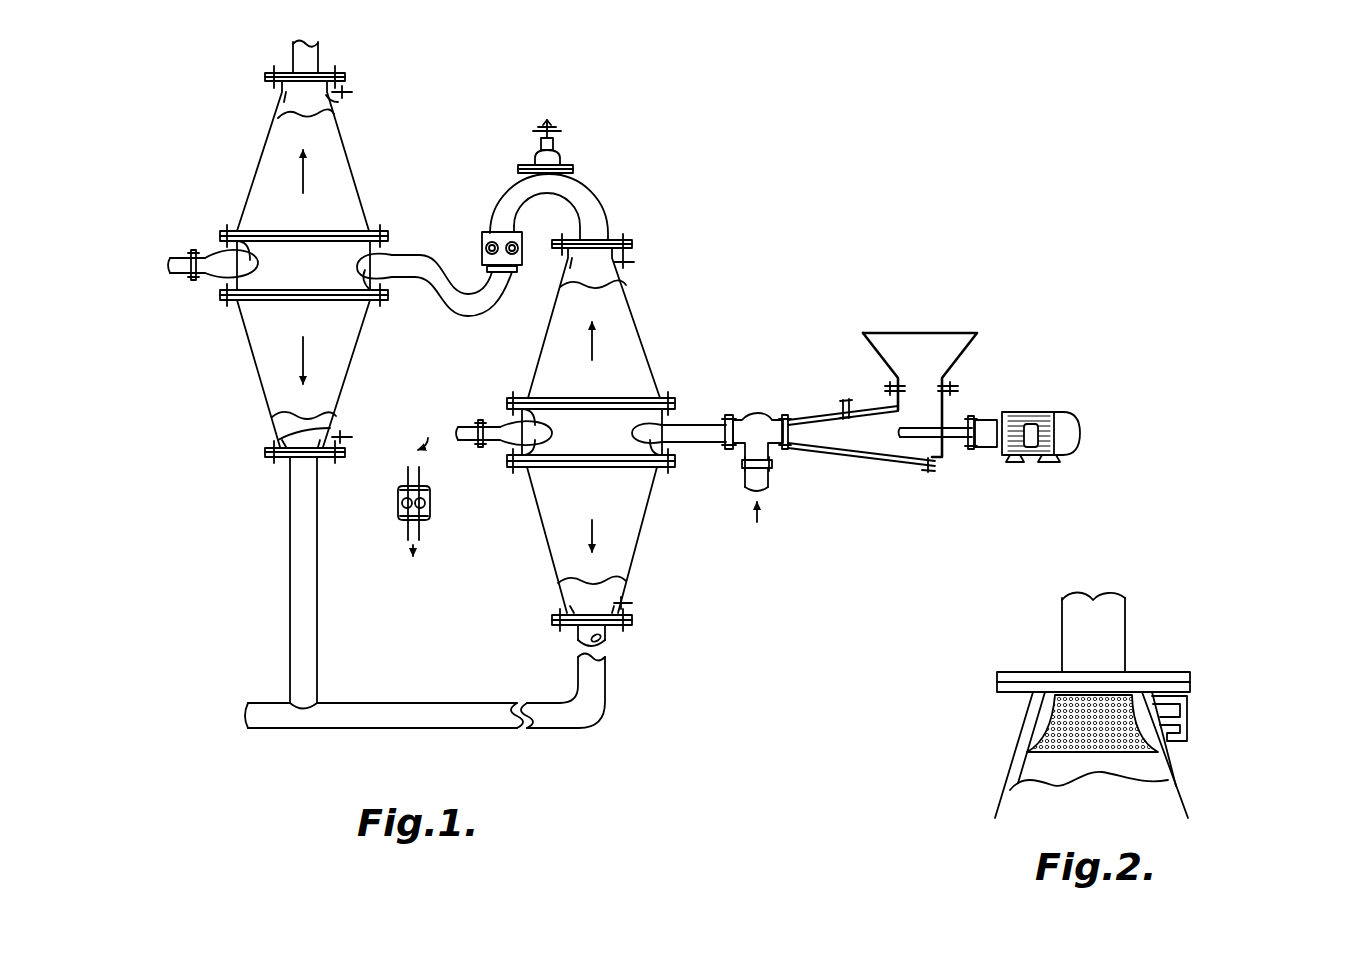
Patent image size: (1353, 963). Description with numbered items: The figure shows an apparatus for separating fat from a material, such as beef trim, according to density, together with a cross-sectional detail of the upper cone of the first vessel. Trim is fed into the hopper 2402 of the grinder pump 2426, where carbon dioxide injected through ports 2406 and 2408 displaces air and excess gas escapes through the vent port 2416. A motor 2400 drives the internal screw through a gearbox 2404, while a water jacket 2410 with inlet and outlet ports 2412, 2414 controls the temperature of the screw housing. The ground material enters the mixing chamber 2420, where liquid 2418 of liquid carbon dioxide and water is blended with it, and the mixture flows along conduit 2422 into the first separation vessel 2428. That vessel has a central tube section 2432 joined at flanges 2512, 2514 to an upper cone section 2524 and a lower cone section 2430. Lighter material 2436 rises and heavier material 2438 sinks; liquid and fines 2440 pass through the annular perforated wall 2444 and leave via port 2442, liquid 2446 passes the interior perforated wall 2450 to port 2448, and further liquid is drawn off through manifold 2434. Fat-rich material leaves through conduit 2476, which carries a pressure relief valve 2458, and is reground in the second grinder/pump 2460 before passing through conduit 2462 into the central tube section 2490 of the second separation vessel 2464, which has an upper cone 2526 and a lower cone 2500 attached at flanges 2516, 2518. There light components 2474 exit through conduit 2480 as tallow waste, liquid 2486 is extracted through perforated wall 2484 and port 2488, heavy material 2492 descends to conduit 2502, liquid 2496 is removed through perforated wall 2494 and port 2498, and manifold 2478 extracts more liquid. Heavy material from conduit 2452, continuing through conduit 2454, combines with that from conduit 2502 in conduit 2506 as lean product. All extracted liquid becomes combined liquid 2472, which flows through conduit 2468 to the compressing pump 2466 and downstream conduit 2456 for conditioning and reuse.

In FIG. 1, the motor 2400 is at (1040, 420).
In FIG. 1, the hopper 2402 is at (948, 345).
In FIG. 1, the gearbox 2404 is at (965, 432).
In FIG. 1, the port 2406 is at (962, 388).
In FIG. 1, the port 2408 is at (870, 340).
In FIG. 1, the water jacket 2410 is at (830, 452).
In FIG. 1, the inlet port 2412 is at (805, 410).
In FIG. 1, the outlet port 2414 is at (930, 472).
In FIG. 1, the vent port 2416 is at (845, 395).
In FIG. 1, the liquid 2418 is at (757, 503).
In FIG. 1, the mixing chamber 2420 is at (758, 425).
In FIG. 1, the conduit 2422 is at (718, 430).
In FIG. 1, the grinder pump 2426 is at (1032, 330).
In FIG. 1, the first separation vessel 2428 is at (655, 349).
In FIG. 1, the lower cone section 2430 is at (652, 498).
In FIG. 1, the central tube section 2432 is at (640, 408).
In FIG. 1, the manifold 2434 is at (512, 435).
In FIG. 1, the lighter material 2436 is at (600, 338).
In FIG. 1, the heavier material 2438 is at (535, 540).
In FIG. 1, the liquid and fine particles 2440 is at (630, 253).
In FIG. 1, the port 2442 is at (636, 264).
In FIG. 2, the port 2442 is at (1178, 742).
In FIG. 1, the annular perforated wall 2444 is at (565, 262).
In FIG. 2, the annular perforated wall 2444 is at (1045, 712).
In FIG. 1, the liquid 2446 is at (640, 605).
In FIG. 1, the port 2448 is at (627, 602).
In FIG. 1, the interior perforated wall 2450 is at (566, 606).
In FIG. 1, the conduit 2452 is at (600, 643).
In FIG. 1, the conduit 2454 is at (590, 703).
In FIG. 1, the downstream conduit 2456 is at (410, 527).
In FIG. 1, the pressure relief valve 2458 is at (555, 130).
In FIG. 1, the second grinder/pump 2460 is at (488, 235).
In FIG. 1, the conduit 2462 is at (420, 262).
In FIG. 1, the second separation vessel 2464 is at (305, 172).
In FIG. 1, the compressing pump 2466 is at (430, 505).
In FIG. 1, the conduit 2468 is at (405, 485).
In FIG. 1, the combined liquid 2472 is at (453, 454).
In FIG. 1, the light components 2474 is at (373, 160).
In FIG. 1, the conduit 2476 is at (590, 210).
In FIG. 1, the manifold 2478 is at (212, 262).
In FIG. 1, the conduit 2480 is at (318, 60).
In FIG. 1, the interior perforated wall 2484 is at (280, 96).
In FIG. 1, the liquid 2486 is at (352, 90).
In FIG. 1, the port 2488 is at (340, 100).
In FIG. 1, the central tube section 2490 is at (345, 231).
In FIG. 1, the heavy material components 2492 is at (298, 356).
In FIG. 1, the annular perforated wall 2494 is at (278, 441).
In FIG. 1, the liquid 2496 is at (350, 440).
In FIG. 1, the port 2498 is at (300, 432).
In FIG. 1, the lower cone 2500 is at (258, 380).
In FIG. 1, the conduit 2502 is at (302, 582).
In FIG. 1, the conduit 2506 is at (395, 715).
In FIG. 1, the flange 2512 is at (528, 396).
In FIG. 1, the flange 2514 is at (530, 470).
In FIG. 1, the flange 2516 is at (252, 231).
In FIG. 1, the flange 2518 is at (380, 300).
In FIG. 1, the upper cone section 2524 is at (640, 300).
In FIG. 2, the upper cone section 2524 is at (1184, 795).
In FIG. 1, the upper cone 2526 is at (258, 160).